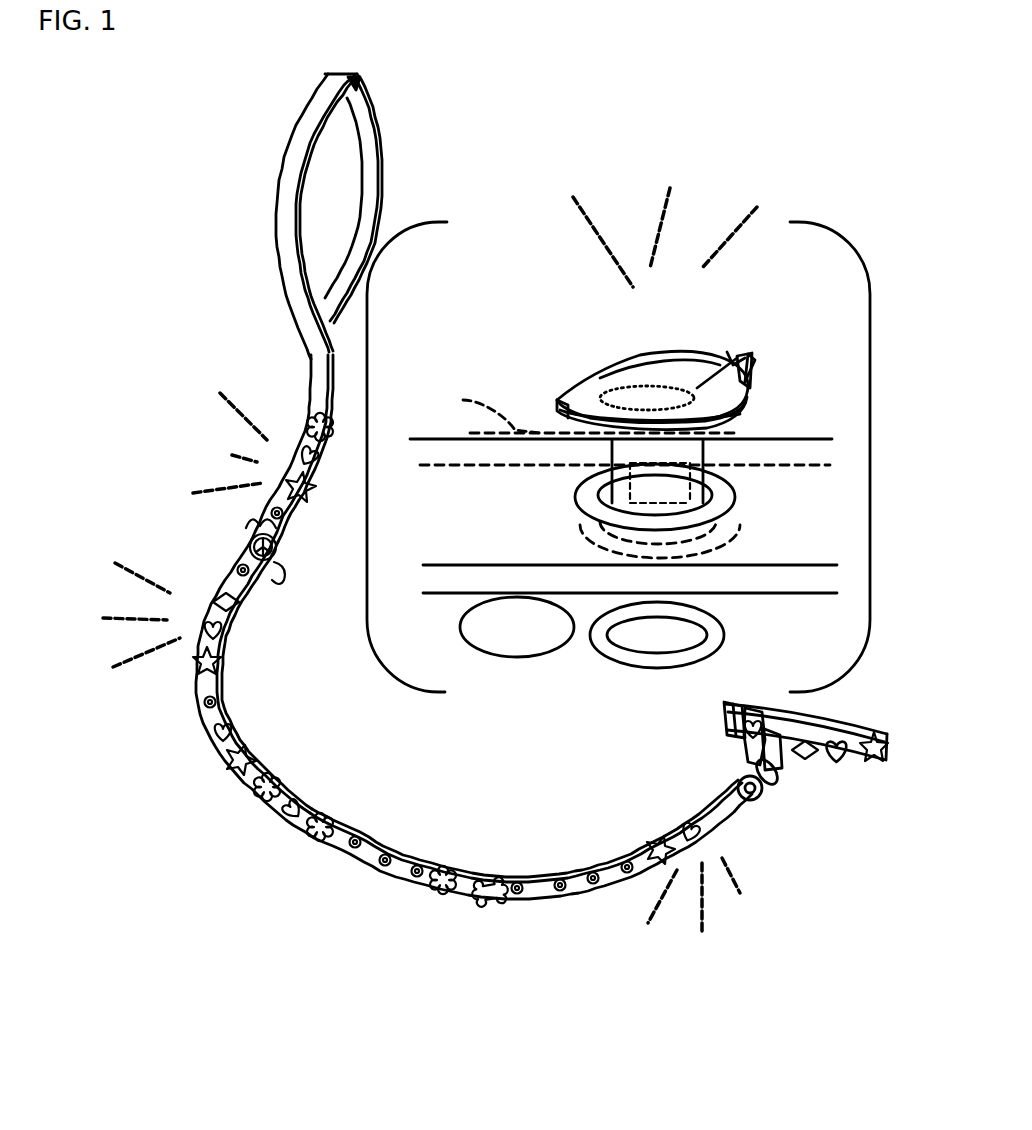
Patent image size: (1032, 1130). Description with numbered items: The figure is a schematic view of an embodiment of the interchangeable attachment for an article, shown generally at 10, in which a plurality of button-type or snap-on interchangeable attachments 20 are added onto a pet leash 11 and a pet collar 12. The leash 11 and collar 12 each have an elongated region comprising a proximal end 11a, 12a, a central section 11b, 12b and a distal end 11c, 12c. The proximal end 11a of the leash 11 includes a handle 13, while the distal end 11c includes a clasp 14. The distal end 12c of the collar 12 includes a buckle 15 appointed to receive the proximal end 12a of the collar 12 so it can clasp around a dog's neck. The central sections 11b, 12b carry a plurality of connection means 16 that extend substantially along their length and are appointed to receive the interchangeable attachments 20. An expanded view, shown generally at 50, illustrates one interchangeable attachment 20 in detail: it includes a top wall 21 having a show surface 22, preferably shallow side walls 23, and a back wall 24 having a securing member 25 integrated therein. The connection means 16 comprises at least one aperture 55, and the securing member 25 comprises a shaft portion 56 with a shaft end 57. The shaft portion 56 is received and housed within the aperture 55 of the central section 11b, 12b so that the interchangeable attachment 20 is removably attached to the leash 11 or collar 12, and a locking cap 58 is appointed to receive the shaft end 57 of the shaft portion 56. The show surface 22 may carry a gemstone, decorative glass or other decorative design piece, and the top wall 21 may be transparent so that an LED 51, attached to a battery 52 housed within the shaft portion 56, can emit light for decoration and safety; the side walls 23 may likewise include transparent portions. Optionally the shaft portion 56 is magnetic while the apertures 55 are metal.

The interchangeable attachment for an article 10 is at (158, 150).
The leash 11 is at (400, 595).
The proximal end of leash 11a is at (290, 300).
The central section of leash 11b is at (197, 675).
The distal end of leash 11c is at (720, 790).
The collar 12 is at (749, 799).
The proximal end of collar 12a is at (717, 733).
The central section of collar 12b is at (855, 717).
The distal end of collar 12c is at (738, 710).
The handle 13 is at (287, 188).
The clasp 14 is at (770, 783).
The buckle 15 is at (722, 733).
The connection means 16 is at (290, 483).
The interchangeable attachment 20 is at (253, 793).
The top wall 21 is at (643, 380).
The show surface 22 is at (632, 410).
The side walls 23 is at (752, 382).
The back wall 24 is at (470, 405).
The securing member 25 is at (600, 460).
The expanded view of interchangeable attachment 50 is at (618, 470).
The LED 51 is at (727, 353).
The battery 52 is at (720, 505).
The aperture 55 is at (623, 477).
The shaft portion 56 is at (707, 475).
The shaft end 57 is at (692, 545).
The locking cap 58 is at (600, 652).